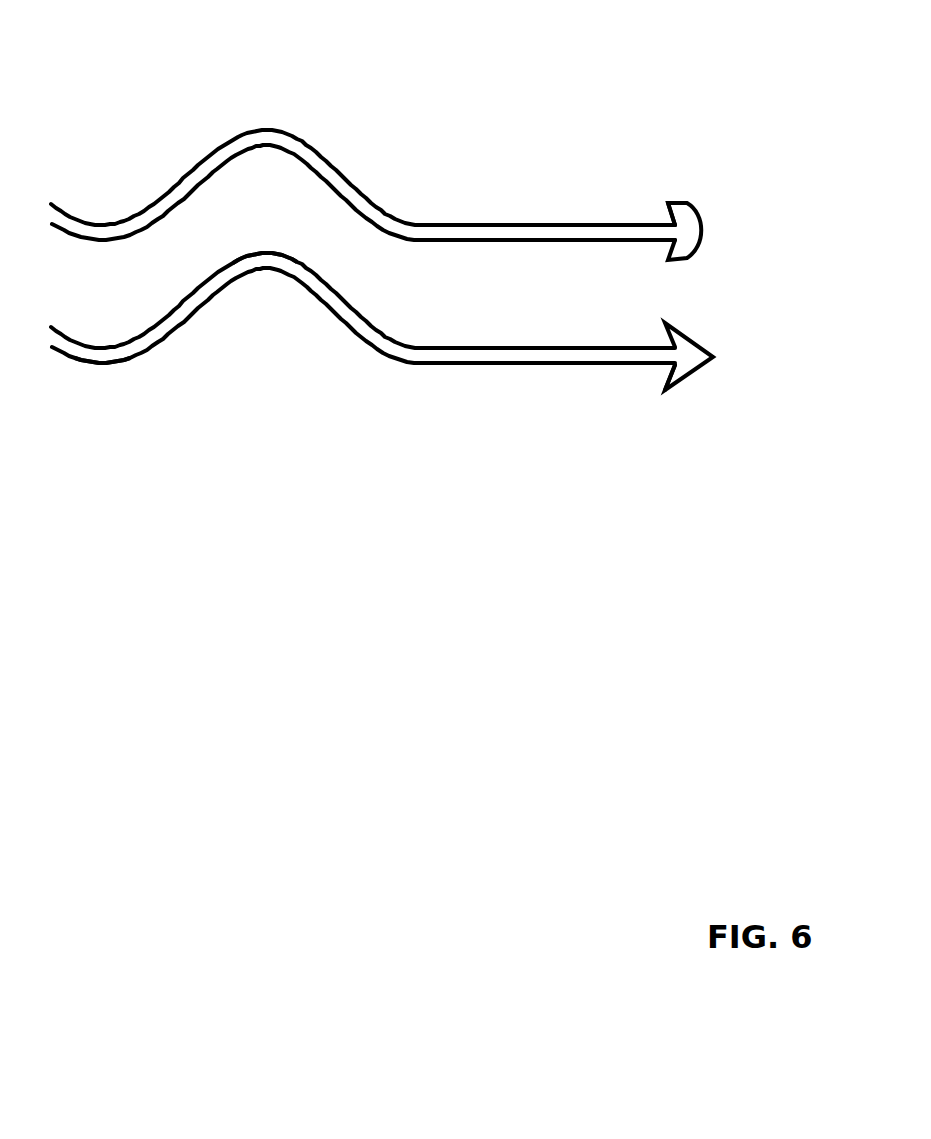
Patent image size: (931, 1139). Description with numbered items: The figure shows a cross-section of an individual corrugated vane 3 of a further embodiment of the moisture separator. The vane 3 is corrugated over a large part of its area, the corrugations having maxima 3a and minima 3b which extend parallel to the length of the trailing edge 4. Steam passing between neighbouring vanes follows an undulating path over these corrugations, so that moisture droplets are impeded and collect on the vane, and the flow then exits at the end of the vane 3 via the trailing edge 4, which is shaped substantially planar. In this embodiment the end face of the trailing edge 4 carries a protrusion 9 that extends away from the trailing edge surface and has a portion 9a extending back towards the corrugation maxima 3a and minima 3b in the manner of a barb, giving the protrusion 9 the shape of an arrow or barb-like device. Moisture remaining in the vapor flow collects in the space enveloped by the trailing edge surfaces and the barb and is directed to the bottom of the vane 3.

The vane 3 is at (262, 103).
The maxima 3a is at (265, 270).
The minima 3b is at (100, 368).
The trailing edge 4 is at (545, 223).
The protrusion 9 is at (694, 338).
The portion 9a is at (666, 213).